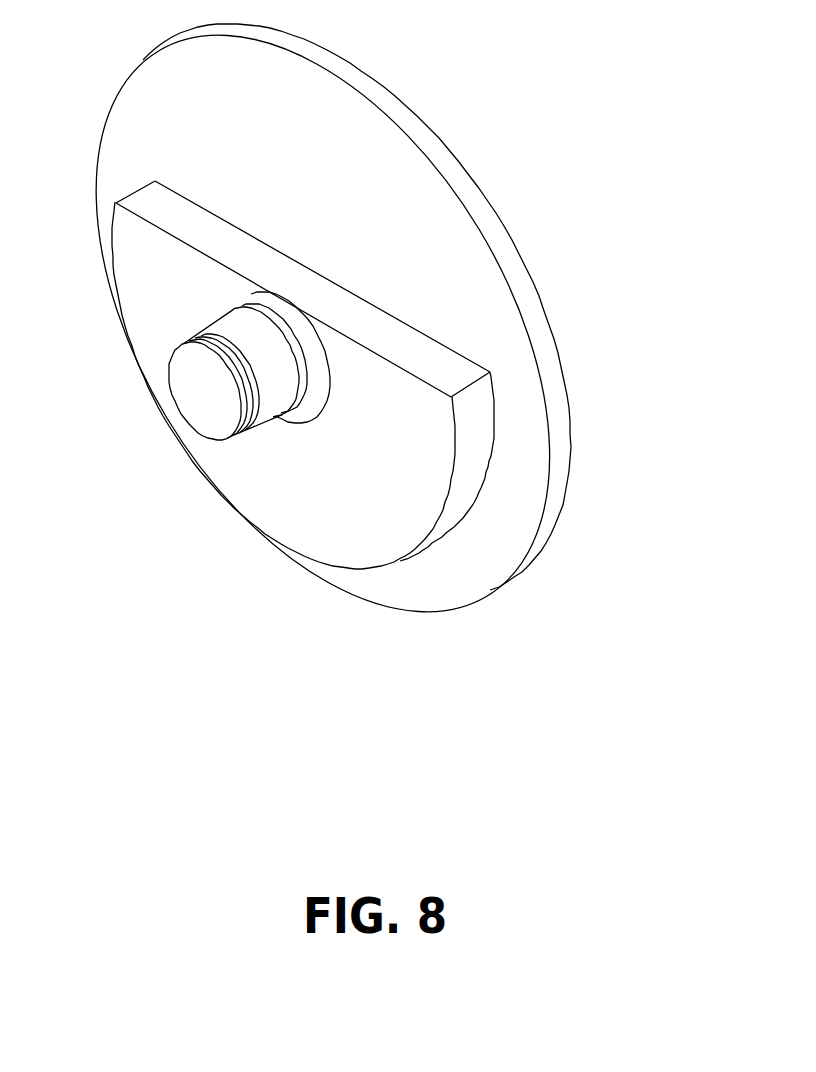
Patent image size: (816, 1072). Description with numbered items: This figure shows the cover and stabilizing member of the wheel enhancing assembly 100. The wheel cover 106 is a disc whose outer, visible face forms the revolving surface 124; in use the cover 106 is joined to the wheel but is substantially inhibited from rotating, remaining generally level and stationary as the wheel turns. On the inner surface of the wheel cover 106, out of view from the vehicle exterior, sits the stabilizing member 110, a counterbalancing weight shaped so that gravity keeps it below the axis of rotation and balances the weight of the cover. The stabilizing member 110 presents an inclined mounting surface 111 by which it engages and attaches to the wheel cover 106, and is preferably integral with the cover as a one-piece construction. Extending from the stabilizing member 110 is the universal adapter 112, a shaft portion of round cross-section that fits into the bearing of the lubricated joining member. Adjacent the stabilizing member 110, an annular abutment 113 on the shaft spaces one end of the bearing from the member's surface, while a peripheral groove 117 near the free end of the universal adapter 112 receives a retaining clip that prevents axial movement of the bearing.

The wheel enhancing assembly 100 is at (583, 167).
The wheel cover 106 is at (382, 110).
The stabilizing member 110 is at (400, 562).
The mounting surface 111 is at (316, 273).
The universal adapter 112 is at (207, 330).
The annular abutment 113 is at (310, 393).
The peripheral groove 117 is at (258, 425).
The revolving surface 124 is at (573, 433).